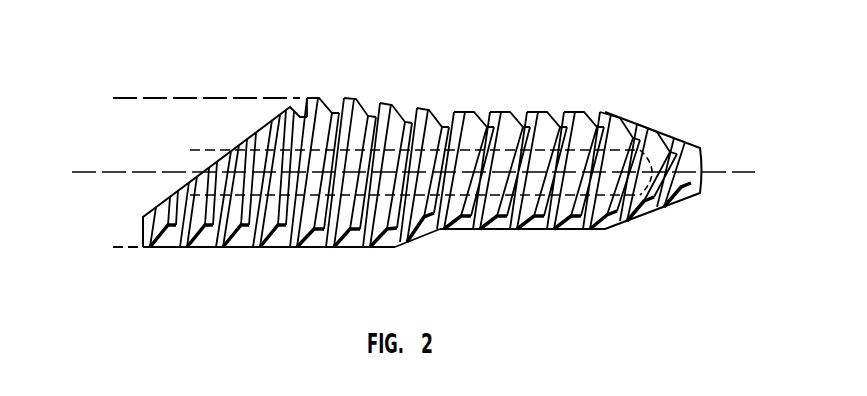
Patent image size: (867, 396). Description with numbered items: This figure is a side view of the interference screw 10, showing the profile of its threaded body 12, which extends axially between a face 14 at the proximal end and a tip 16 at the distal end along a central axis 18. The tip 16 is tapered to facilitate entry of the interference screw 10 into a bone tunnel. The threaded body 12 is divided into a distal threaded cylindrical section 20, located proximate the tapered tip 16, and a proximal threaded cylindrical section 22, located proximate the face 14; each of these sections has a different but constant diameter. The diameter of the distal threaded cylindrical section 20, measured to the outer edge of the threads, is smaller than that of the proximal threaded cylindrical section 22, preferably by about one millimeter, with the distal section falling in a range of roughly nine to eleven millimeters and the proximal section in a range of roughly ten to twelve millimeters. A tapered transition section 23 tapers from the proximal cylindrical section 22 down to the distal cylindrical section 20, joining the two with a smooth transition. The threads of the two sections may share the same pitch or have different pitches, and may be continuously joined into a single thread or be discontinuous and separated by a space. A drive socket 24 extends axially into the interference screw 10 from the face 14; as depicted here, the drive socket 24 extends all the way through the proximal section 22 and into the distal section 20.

The interference screw 10 is at (300, 80).
The threaded body 12 is at (442, 137).
The face 14 is at (232, 150).
The tip 16 is at (700, 150).
The central axis 18 is at (117, 171).
The distal threaded cylindrical section 20 is at (433, 243).
The proximal threaded cylindrical section 22 is at (137, 257).
The tapered transition section 23 is at (433, 243).
The drive socket 24 is at (190, 183).